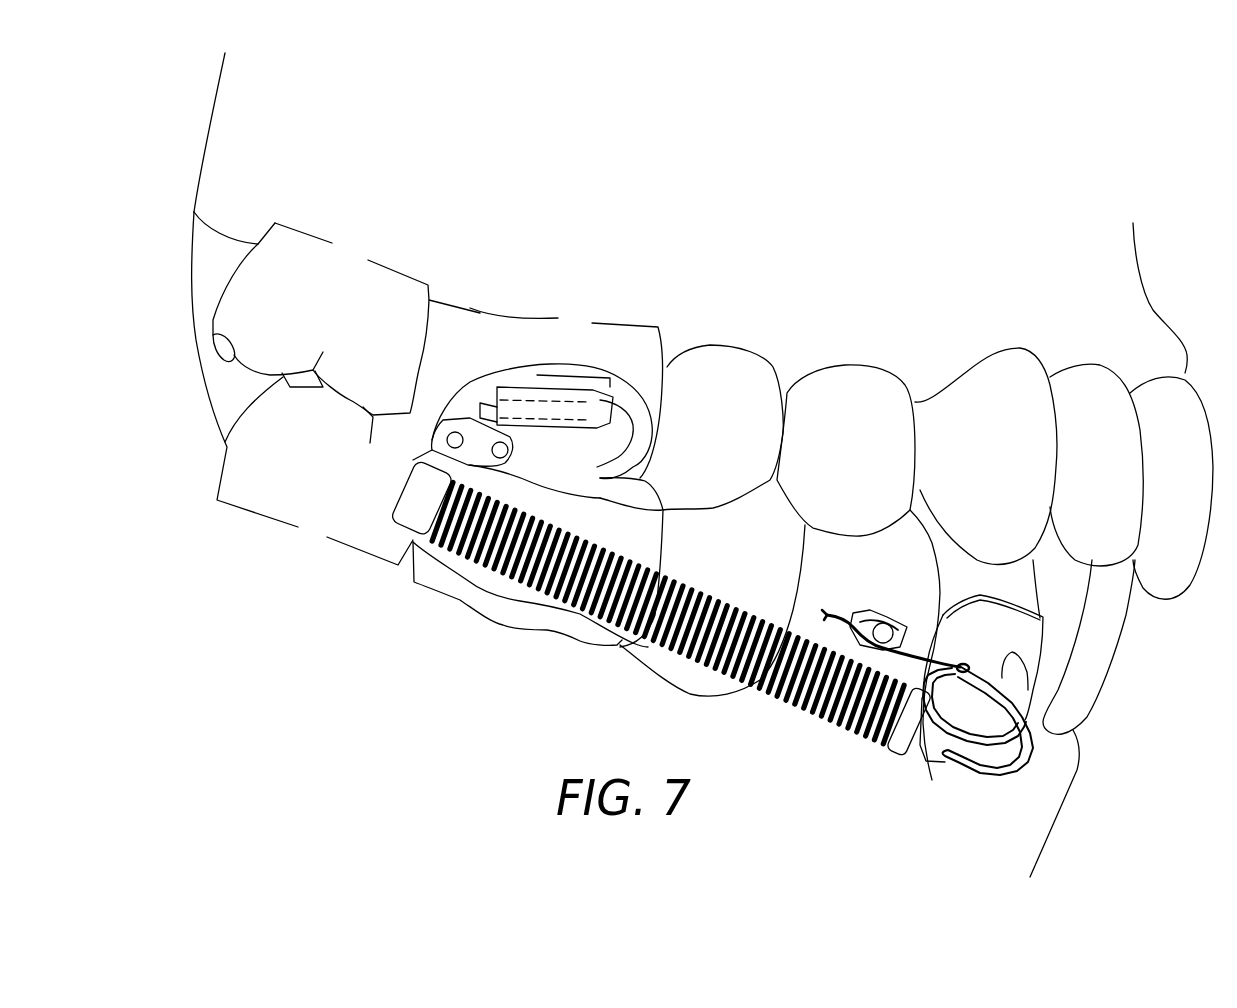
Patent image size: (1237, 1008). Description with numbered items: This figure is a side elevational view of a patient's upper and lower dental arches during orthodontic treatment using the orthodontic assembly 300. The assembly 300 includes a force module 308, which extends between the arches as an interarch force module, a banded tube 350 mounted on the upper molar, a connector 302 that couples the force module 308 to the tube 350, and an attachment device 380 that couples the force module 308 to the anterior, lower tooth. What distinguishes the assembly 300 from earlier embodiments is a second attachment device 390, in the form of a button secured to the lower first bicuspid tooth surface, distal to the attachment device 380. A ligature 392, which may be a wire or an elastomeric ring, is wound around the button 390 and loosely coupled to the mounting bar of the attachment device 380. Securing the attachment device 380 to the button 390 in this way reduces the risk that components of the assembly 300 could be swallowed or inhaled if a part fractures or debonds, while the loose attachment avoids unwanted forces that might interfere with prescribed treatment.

The orthodontic assembly 300 is at (455, 625).
The connector 302 is at (673, 387).
The force module 308 is at (647, 617).
The banded tube 350 is at (530, 385).
The attachment device 380 is at (1020, 670).
The second attachment device 390 is at (877, 650).
The ligature 392 is at (935, 762).